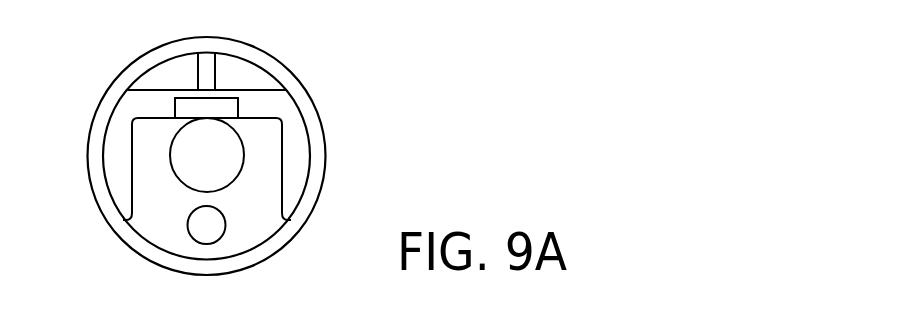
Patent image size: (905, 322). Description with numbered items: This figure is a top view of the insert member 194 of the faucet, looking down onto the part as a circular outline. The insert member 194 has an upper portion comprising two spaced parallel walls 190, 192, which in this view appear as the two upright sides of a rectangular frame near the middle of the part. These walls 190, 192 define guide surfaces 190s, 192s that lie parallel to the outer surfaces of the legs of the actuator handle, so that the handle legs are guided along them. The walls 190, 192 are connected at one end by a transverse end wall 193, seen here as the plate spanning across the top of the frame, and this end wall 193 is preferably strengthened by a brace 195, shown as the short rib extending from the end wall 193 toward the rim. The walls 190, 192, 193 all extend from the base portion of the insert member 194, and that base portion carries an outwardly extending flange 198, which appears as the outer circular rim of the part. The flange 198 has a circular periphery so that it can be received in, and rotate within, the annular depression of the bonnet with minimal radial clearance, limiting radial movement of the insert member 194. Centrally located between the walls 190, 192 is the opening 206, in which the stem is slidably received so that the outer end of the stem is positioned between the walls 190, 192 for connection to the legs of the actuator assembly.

The insert member 194 is at (338, 110).
The flange 198 is at (138, 67).
The brace 195 is at (205, 62).
The transverse end wall 193 is at (252, 98).
The wall 192 is at (123, 182).
The wall 190 is at (289, 182).
The guide surface 192s is at (142, 201).
The guide surface 190s is at (271, 201).
The opening 206 is at (192, 131).